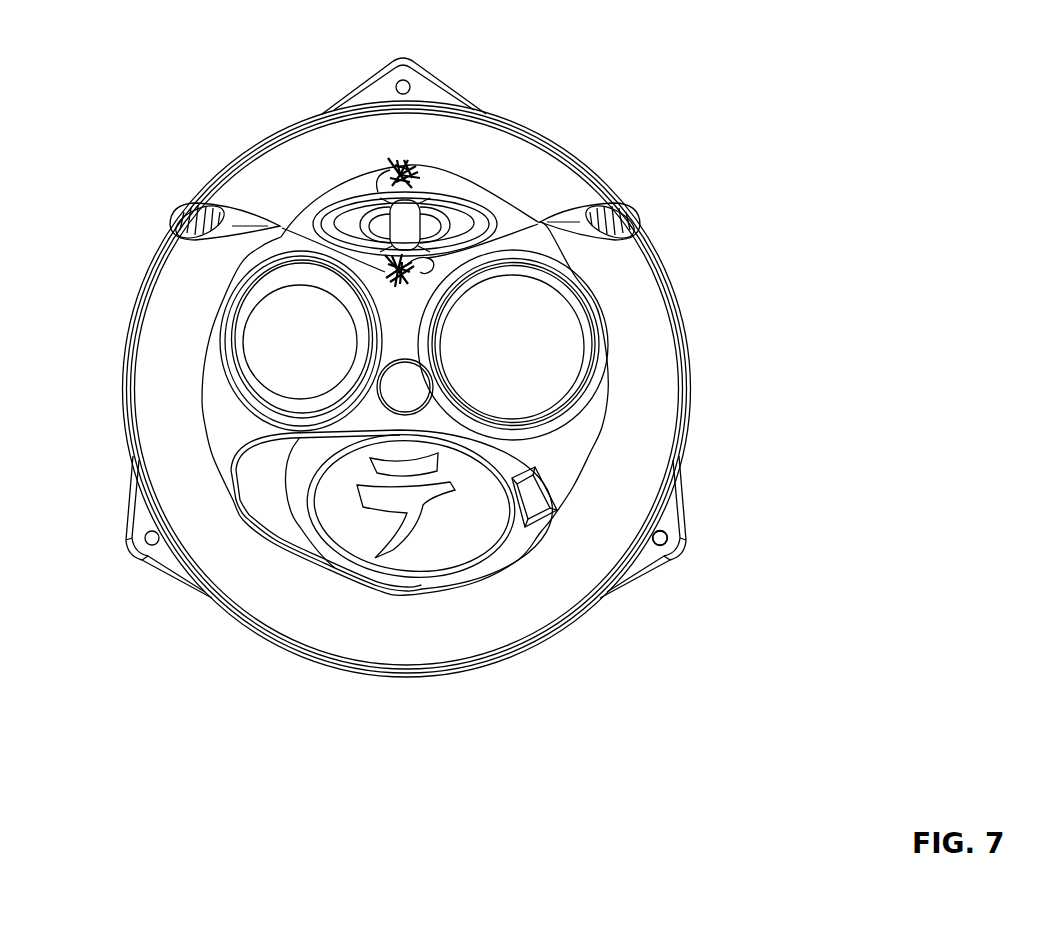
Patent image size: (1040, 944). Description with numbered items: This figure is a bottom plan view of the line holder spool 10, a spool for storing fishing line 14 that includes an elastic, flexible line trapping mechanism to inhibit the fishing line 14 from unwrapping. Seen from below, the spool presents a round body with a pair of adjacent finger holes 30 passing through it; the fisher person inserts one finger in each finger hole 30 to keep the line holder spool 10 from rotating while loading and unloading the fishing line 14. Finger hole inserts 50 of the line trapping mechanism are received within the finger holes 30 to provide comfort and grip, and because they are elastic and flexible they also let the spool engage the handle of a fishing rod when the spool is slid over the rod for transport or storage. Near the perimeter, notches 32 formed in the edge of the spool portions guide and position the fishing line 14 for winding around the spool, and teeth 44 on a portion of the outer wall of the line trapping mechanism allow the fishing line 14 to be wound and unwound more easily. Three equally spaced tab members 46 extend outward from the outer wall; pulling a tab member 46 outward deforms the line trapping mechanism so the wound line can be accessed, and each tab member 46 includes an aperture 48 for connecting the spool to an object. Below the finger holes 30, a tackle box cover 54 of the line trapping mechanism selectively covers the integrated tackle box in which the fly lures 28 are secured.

The line holder spool 10 is at (654, 88).
The fishing line 14 is at (467, 179).
The fly lures 28 is at (421, 156).
The finger holes 30 is at (409, 341).
The notch 32 is at (612, 214).
The teeth 44 is at (190, 219).
The tab member 46 is at (447, 84).
The aperture 48 is at (668, 538).
The finger hole inserts 50 is at (585, 378).
The tackle box cover 54 is at (473, 523).